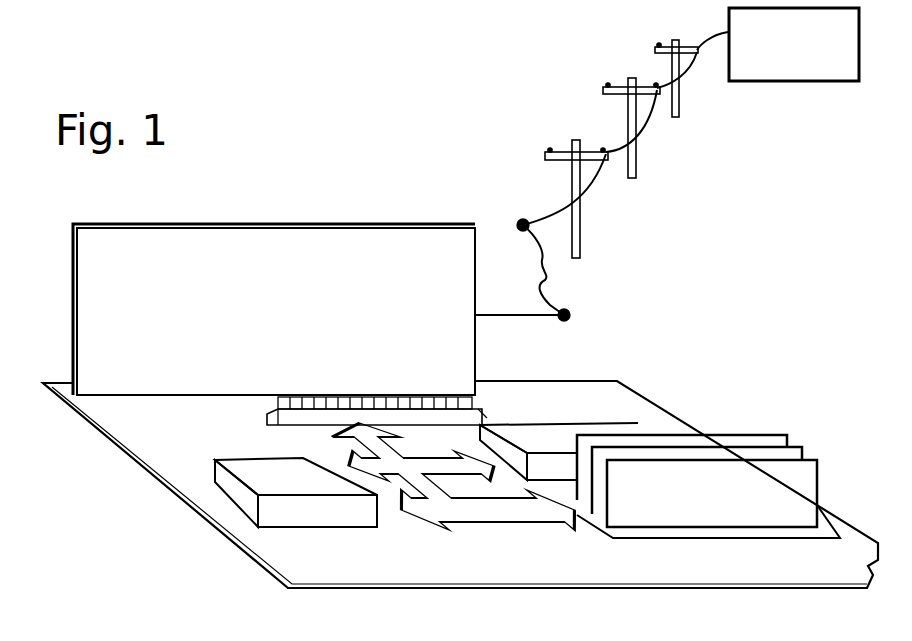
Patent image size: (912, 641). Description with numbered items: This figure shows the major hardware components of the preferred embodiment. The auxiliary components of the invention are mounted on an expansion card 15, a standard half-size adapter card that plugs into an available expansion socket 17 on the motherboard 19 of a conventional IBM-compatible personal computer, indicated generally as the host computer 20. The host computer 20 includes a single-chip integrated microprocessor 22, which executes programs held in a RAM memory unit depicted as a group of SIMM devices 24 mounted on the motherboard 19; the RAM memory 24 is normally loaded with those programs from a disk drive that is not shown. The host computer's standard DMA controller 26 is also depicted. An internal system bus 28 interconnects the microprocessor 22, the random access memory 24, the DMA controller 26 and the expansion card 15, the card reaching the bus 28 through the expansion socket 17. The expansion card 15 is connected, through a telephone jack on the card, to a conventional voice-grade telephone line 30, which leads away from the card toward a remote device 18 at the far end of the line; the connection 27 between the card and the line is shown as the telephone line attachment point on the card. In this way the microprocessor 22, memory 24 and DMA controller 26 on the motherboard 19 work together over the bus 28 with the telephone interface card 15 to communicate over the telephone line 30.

The expansion card 15 is at (117, 310).
The expansion socket 17 is at (293, 437).
The remote device 18 is at (843, 83).
The motherboard 19 is at (260, 533).
The host computer 20 is at (657, 383).
The microprocessor 22 is at (247, 503).
The RAM memory unit 24 is at (713, 473).
The DMA controller 26 is at (605, 428).
The telephone line connection 27 is at (567, 320).
The internal system bus 28 is at (527, 520).
The telephone line 30 is at (690, 187).